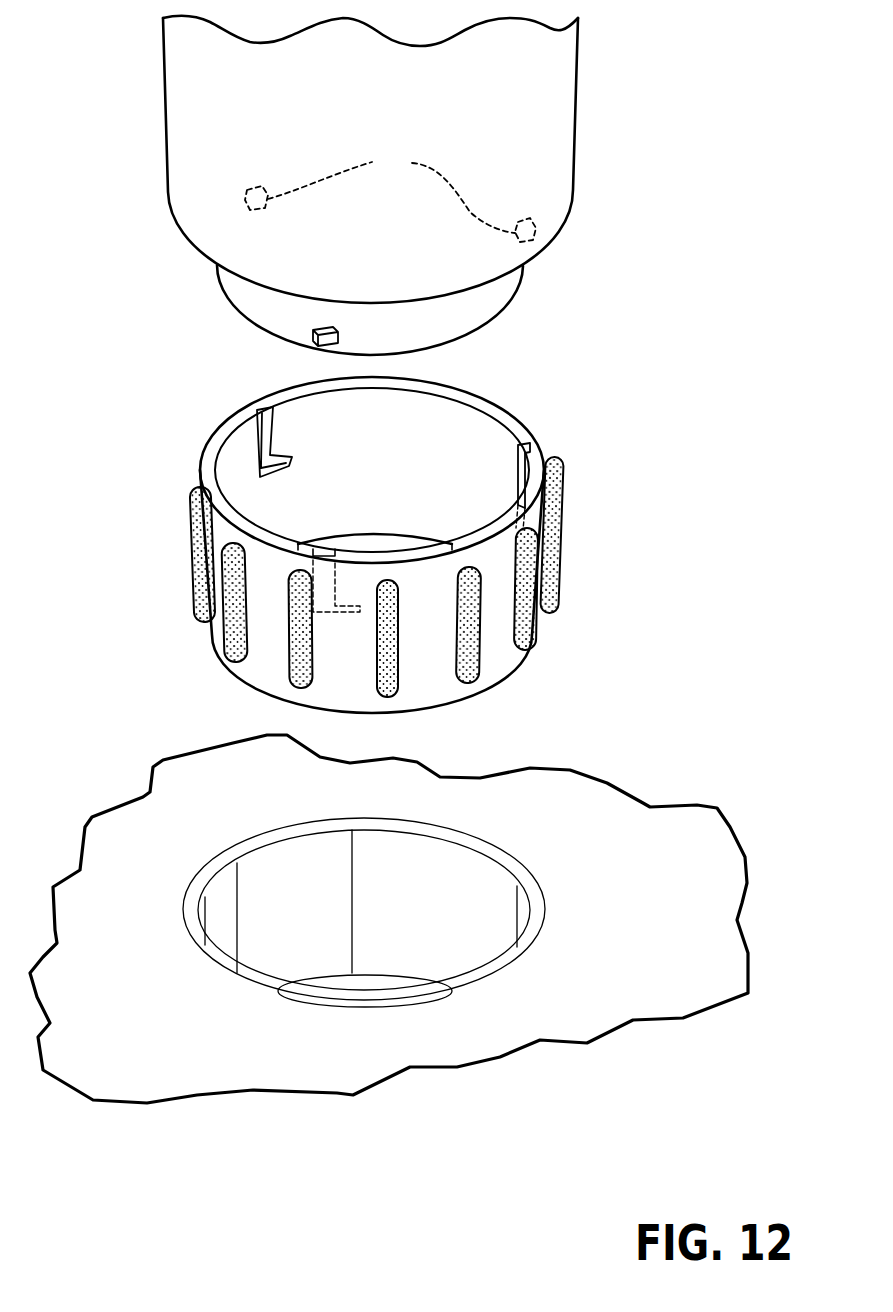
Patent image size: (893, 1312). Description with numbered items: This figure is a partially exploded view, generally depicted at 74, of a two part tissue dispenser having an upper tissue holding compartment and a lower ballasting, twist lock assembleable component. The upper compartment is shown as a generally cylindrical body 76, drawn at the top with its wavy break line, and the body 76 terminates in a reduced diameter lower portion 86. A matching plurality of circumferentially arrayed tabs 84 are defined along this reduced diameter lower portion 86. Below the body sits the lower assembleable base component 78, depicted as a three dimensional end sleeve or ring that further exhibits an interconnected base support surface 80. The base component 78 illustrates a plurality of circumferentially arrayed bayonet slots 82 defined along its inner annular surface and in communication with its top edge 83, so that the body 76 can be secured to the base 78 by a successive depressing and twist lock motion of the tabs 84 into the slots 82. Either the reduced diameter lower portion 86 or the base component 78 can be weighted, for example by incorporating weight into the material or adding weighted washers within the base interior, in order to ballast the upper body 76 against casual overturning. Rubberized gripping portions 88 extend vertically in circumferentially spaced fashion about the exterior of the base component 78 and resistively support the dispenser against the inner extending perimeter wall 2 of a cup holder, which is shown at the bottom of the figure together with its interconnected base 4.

The inner extending perimeter wall 2 is at (263, 877).
The interconnected base 4 is at (335, 978).
The partially exploded view 74 is at (156, 384).
The generally cylindrical body 76 is at (185, 163).
The lower assembleable base component 78 is at (262, 668).
The interconnected base support surface 80 is at (373, 552).
The bayonet slots 82 is at (270, 428).
The top edge 83 is at (210, 467).
The tabs 84 is at (268, 362).
The reduced diameter lower portion 86 is at (485, 303).
The rubberized gripping portions 88 is at (232, 640).